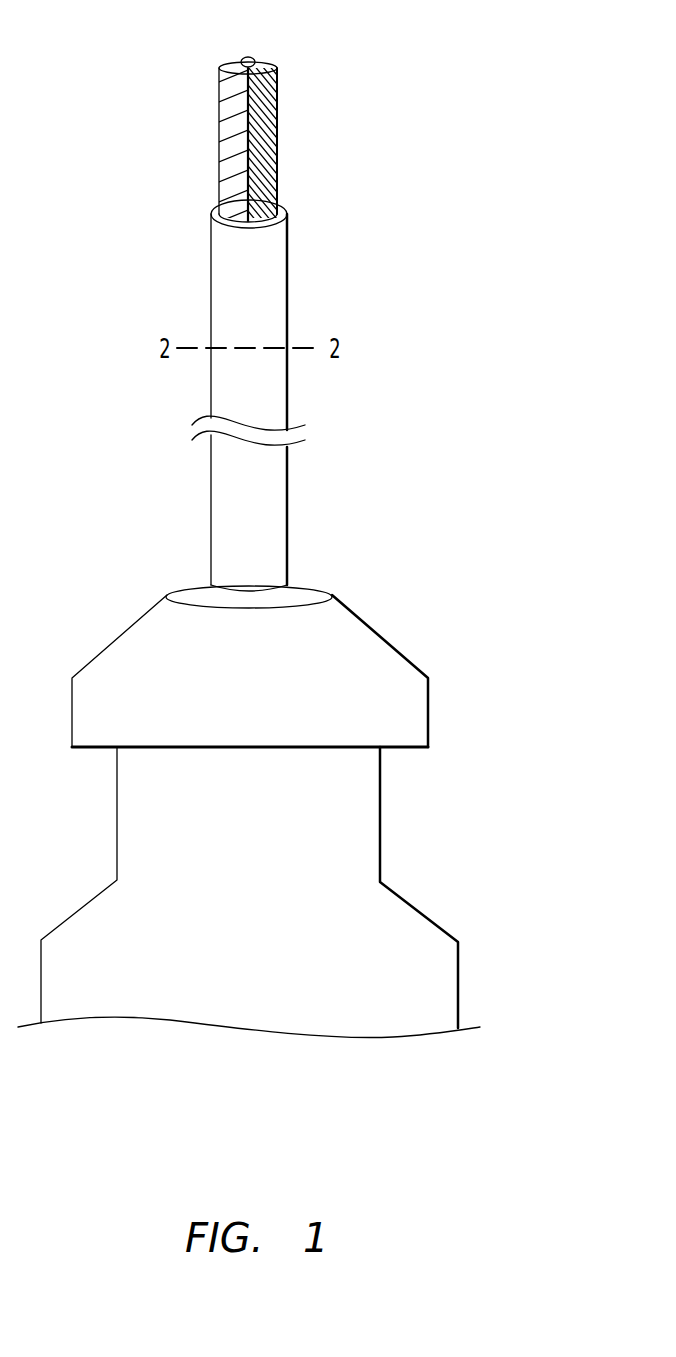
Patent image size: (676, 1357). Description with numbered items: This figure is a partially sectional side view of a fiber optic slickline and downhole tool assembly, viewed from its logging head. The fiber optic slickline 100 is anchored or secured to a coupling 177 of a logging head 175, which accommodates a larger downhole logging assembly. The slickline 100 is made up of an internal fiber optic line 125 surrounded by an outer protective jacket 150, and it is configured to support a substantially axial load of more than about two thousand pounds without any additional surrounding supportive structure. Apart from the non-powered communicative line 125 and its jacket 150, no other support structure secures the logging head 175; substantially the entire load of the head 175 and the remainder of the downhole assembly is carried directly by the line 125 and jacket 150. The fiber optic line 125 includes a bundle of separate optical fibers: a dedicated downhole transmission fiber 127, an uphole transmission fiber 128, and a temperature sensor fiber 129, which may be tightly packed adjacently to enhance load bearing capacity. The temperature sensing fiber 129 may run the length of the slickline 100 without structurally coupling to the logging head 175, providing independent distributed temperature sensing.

The fiber optic slickline 100 is at (325, 242).
The fiber optic line 125 is at (355, 78).
The downhole transmission fiber 127 is at (247, 62).
The uphole transmission fiber 128 is at (292, 43).
The temperature sensor fiber 129 is at (225, 63).
The outer protective jacket 150 is at (215, 205).
The logging head 175 is at (481, 810).
The coupling 177 is at (148, 652).